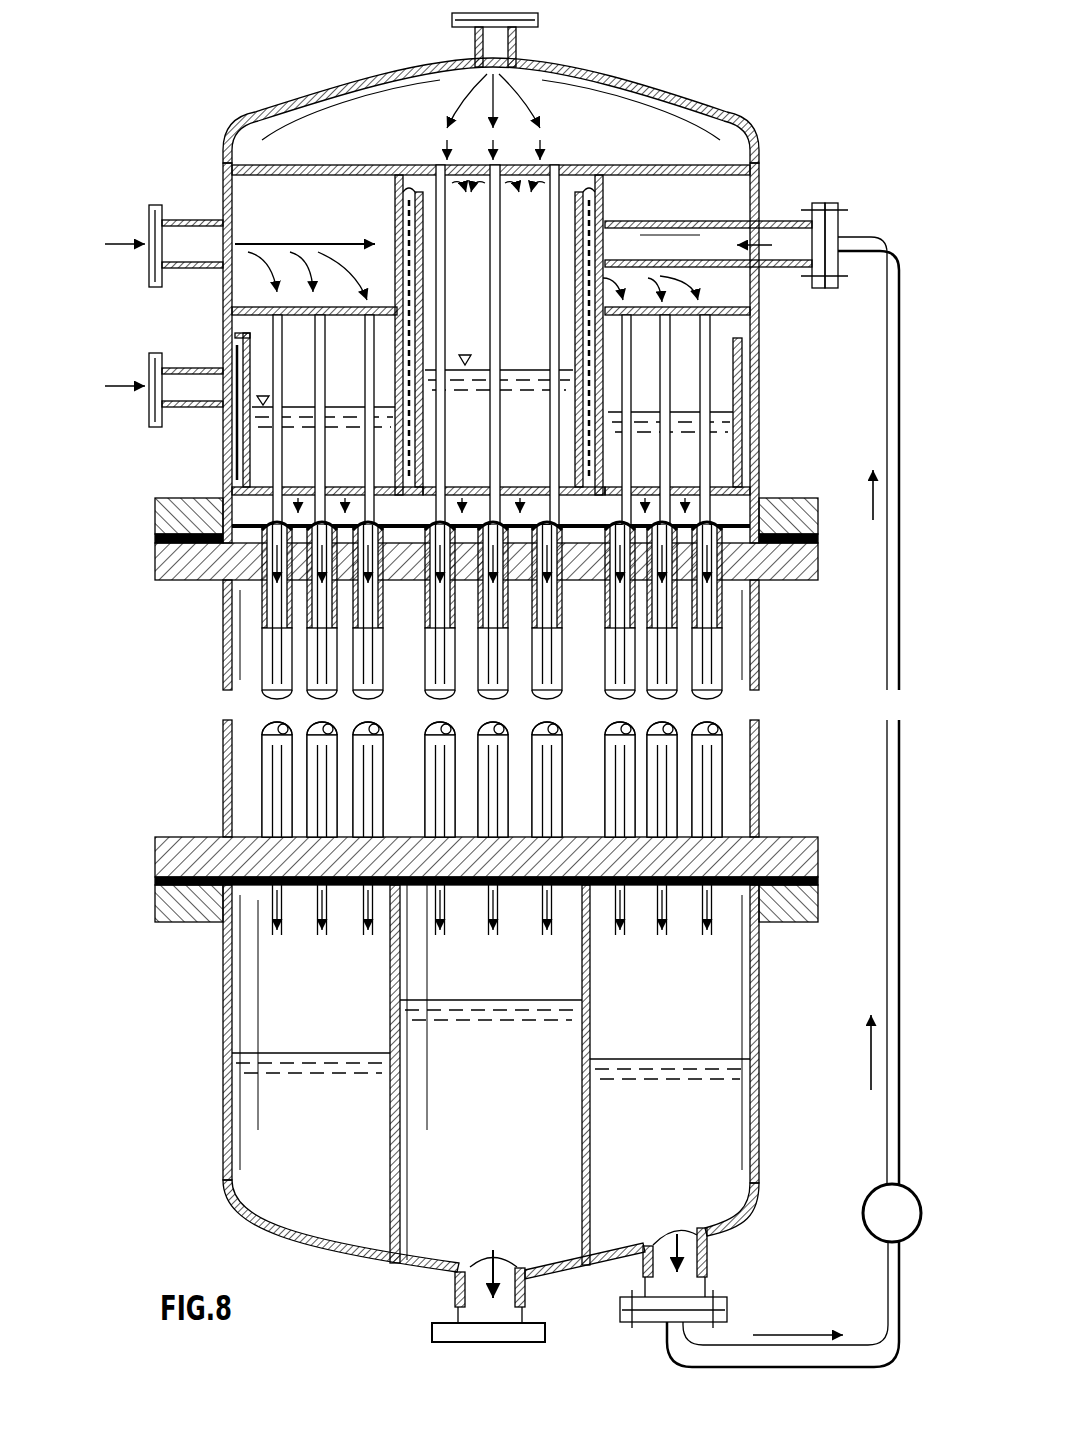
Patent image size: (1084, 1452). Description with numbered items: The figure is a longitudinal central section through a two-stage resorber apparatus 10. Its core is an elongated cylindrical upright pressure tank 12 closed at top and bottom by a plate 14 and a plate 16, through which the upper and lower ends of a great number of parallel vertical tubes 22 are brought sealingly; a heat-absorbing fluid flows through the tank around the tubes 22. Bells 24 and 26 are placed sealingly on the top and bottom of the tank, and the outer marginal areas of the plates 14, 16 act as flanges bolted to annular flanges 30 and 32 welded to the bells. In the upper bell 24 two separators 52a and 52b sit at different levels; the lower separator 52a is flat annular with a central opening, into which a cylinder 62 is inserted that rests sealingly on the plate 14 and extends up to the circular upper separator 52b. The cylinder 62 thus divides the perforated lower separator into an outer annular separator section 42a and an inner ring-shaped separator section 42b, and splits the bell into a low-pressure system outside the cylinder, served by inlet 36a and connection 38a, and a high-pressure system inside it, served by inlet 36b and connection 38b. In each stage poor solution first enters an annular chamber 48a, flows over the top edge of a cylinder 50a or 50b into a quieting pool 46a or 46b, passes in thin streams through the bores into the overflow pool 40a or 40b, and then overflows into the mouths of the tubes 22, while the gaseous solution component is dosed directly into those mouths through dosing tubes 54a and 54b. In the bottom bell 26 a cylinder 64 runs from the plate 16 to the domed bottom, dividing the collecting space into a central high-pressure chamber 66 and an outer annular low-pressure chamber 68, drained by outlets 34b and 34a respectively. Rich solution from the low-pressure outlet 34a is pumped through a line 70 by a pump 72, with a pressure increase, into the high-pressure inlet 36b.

The apparatus 10 is at (212, 657).
The pressure tank 12 is at (760, 652).
The upper plate 14 is at (818, 580).
The bottom plate 16 is at (180, 837).
The tubes 22 is at (262, 732).
The upper bell 24 is at (760, 408).
The bottom bell 26 is at (222, 1115).
The annular flange 30 is at (818, 516).
The annular flange 32 is at (180, 924).
The low-pressure outlet 34a is at (710, 1270).
The high-pressure outlet 34b is at (526, 1310).
The low-pressure inlet 36a is at (160, 427).
The high-pressure inlet 36b is at (793, 221).
The low-pressure connection 38a is at (185, 215).
The high-pressure connection 38b is at (478, 55).
The low-pressure overflow pool 40a is at (222, 582).
The high-pressure overflow pool 40b is at (520, 485).
The outer separator section 42a is at (760, 487).
The inner separator section 42b is at (478, 483).
The low-pressure quieting pool 46a is at (236, 447).
The high-pressure quieting pool 46b is at (585, 398).
The low-pressure annular chamber 48a is at (745, 420).
The low-pressure cylinder 50a is at (232, 345).
The high-pressure cylinder 50b is at (600, 212).
The lower separator 52a is at (237, 296).
The upper separator 52b is at (678, 167).
The low-pressure dosing tubes 54a is at (706, 386).
The high-pressure dosing tubes 54b is at (441, 270).
The cylinder 62 is at (394, 217).
The cylinder 64 is at (591, 992).
The high-pressure chamber 66 is at (516, 1073).
The low-pressure chamber 68 is at (336, 1067).
The line 70 is at (887, 987).
The pump 72 is at (878, 1235).